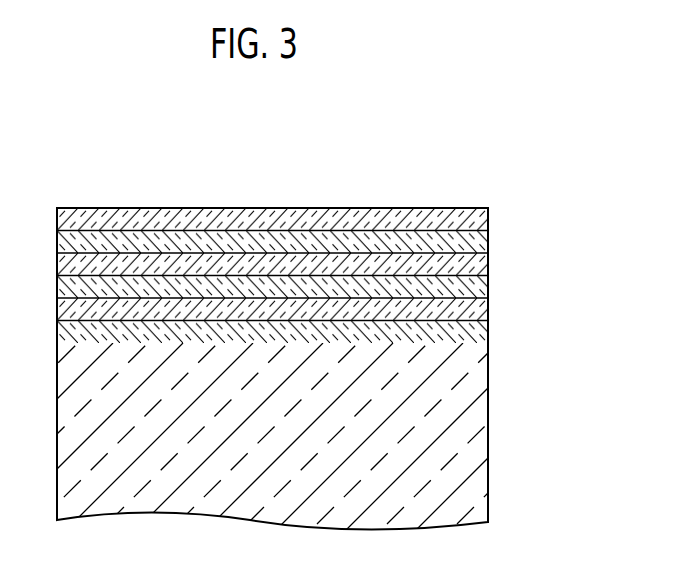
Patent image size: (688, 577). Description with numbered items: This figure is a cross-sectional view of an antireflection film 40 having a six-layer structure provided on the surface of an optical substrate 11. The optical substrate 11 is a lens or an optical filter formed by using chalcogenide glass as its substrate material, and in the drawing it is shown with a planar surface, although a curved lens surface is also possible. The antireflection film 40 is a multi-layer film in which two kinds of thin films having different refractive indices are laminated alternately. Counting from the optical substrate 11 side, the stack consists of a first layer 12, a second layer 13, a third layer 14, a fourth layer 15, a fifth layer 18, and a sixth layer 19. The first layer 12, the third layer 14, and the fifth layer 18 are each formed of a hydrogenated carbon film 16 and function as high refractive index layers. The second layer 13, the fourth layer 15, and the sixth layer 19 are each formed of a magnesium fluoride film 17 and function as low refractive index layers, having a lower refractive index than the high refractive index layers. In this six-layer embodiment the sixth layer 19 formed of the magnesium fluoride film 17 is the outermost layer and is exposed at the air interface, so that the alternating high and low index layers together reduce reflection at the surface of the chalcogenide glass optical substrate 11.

The optical substrate 11 is at (488, 402).
The first layer 12 is at (490, 332).
The second layer 13 is at (490, 305).
The third layer 14 is at (490, 285).
The fourth layer 15 is at (490, 262).
The hydrogenated carbon film 16 is at (350, 335).
The magnesium fluoride film 17 is at (173, 312).
The fifth layer 18 is at (490, 240).
The sixth layer 19 is at (490, 218).
The antireflection film 40 is at (462, 206).